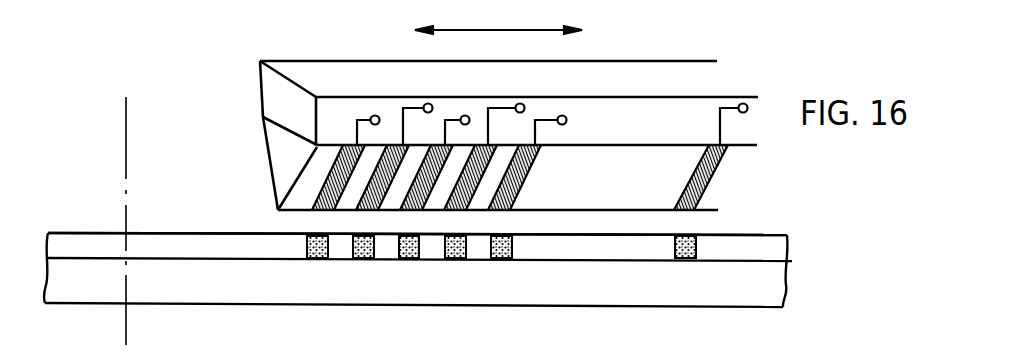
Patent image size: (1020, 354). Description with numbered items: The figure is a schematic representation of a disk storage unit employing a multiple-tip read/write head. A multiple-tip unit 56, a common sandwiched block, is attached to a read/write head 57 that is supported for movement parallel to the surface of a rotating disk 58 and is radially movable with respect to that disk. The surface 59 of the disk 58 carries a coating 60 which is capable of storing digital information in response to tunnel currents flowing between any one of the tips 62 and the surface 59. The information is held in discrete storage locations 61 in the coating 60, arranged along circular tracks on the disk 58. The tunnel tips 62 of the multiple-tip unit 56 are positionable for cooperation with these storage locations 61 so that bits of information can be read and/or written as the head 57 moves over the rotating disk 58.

The multiple-tip unit 56 is at (285, 144).
The read/write head 57 is at (337, 72).
The rotating disk 58 is at (770, 285).
The surface 59 is at (208, 234).
The coating 60 is at (744, 245).
The discrete storage locations 61 is at (317, 260).
The tunnel tips 62 is at (498, 214).